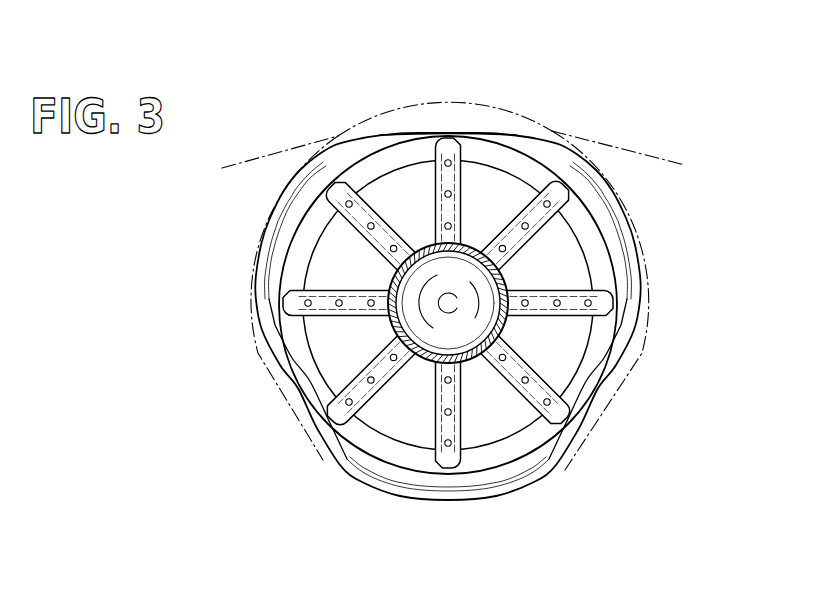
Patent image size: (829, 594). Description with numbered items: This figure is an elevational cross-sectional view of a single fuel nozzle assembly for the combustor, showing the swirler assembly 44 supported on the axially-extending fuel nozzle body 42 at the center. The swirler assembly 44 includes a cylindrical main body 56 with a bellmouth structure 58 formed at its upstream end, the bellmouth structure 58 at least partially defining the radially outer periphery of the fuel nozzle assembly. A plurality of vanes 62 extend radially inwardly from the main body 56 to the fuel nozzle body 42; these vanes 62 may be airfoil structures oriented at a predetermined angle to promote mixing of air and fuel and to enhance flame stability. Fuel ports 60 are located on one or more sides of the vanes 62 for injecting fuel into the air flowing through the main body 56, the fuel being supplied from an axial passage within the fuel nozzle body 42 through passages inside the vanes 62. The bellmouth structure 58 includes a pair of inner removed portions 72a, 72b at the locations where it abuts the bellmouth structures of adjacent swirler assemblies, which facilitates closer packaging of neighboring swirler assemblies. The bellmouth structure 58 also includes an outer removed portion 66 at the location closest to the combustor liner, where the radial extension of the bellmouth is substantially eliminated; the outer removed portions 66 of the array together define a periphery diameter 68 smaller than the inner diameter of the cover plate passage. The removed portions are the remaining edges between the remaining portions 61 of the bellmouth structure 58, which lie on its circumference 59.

The fuel nozzle body 42 is at (404, 370).
The swirler assembly 44 is at (660, 280).
The main body 56 is at (298, 263).
The bellmouth structure 58 is at (610, 217).
The circumference 59 is at (368, 122).
The fuel ports 60 is at (352, 203).
The remaining portions 61 is at (292, 183).
The vanes 62 is at (513, 392).
The outer removed portion 66 is at (518, 135).
The periphery diameter 68 is at (622, 152).
The inner removed portion 72a is at (299, 393).
The inner removed portion 72b is at (597, 392).